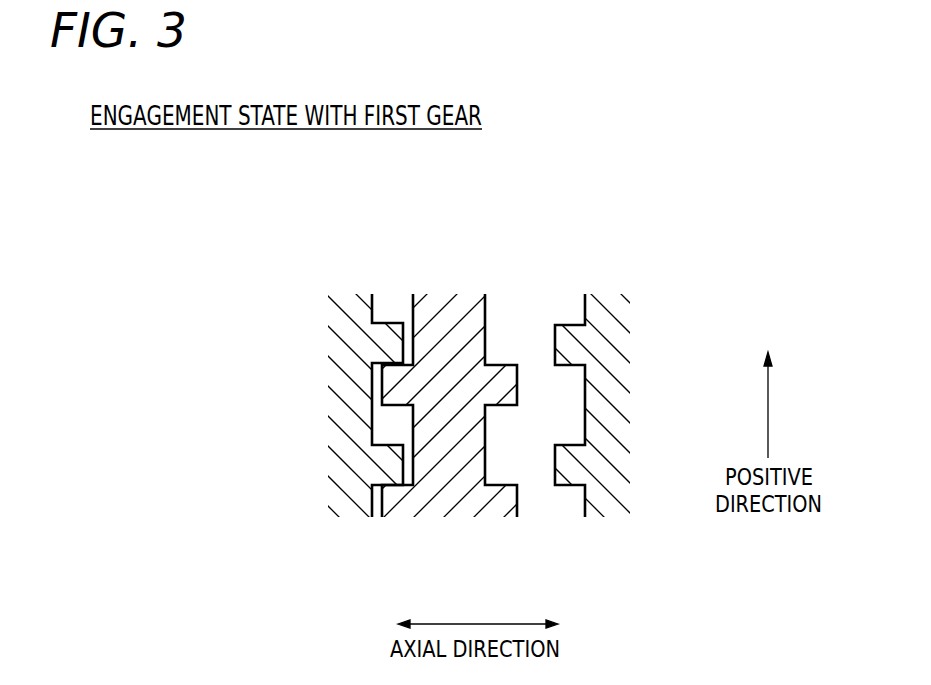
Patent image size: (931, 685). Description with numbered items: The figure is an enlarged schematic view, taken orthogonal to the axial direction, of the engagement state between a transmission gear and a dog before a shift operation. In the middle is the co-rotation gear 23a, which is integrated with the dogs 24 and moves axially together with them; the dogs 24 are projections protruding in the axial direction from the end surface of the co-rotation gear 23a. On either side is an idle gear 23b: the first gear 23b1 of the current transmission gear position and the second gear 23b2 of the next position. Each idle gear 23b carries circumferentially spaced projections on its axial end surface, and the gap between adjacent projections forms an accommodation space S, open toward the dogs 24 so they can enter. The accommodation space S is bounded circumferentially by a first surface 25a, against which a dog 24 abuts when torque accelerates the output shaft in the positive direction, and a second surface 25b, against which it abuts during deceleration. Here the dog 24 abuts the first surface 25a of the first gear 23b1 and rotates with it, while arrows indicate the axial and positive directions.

The idle gear 23b is at (516, 386).
The first gear 23b1 is at (352, 308).
The second gear 23b2 is at (604, 302).
The co-rotation gear 23a is at (448, 312).
The dog 24 is at (392, 380).
The first surface 25a is at (372, 377).
The second surface 25b is at (373, 320).
The accommodation space S is at (567, 307).